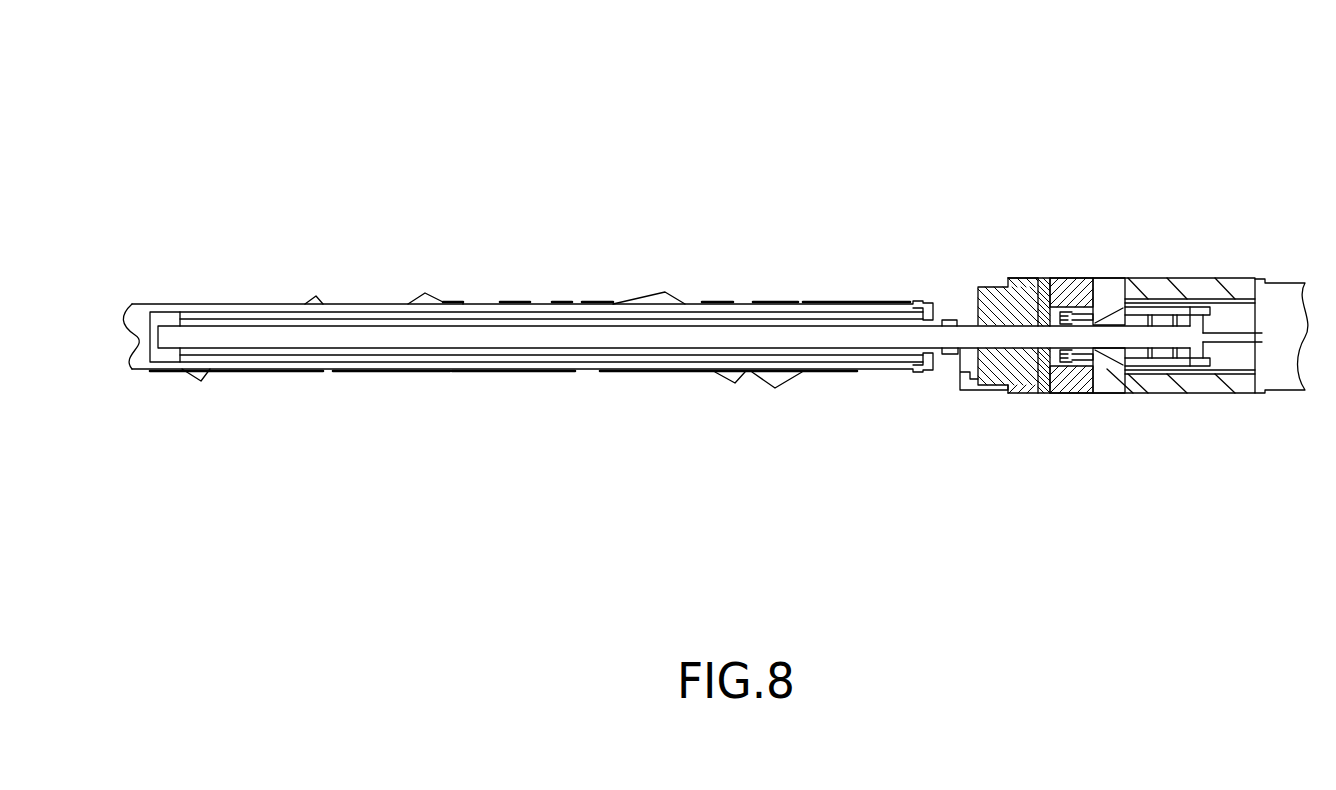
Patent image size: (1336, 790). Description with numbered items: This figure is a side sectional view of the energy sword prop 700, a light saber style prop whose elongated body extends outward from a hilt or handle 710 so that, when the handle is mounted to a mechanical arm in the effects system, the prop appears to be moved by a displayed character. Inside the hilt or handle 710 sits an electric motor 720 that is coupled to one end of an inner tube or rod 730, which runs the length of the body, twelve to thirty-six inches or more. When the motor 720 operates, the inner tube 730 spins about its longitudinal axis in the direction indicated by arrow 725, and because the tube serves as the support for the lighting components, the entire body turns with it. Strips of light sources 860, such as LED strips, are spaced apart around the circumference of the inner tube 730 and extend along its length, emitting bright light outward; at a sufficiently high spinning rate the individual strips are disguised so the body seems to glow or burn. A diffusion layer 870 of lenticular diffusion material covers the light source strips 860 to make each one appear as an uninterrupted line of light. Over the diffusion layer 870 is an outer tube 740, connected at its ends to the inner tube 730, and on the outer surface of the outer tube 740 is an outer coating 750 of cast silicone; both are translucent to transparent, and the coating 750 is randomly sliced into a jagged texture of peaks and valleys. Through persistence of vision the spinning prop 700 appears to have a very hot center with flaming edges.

The physical prop 700 is at (324, 146).
The hilt or handle 710 is at (1273, 412).
The electric motor 720 is at (1115, 390).
The arrow indicating rotation 725 is at (1006, 296).
The inner tube or rod 730 is at (957, 311).
The outer tube 740 is at (372, 333).
The outer coating 750 is at (681, 290).
The strips of light sources 860 is at (167, 314).
The diffusion layer 870 is at (214, 308).